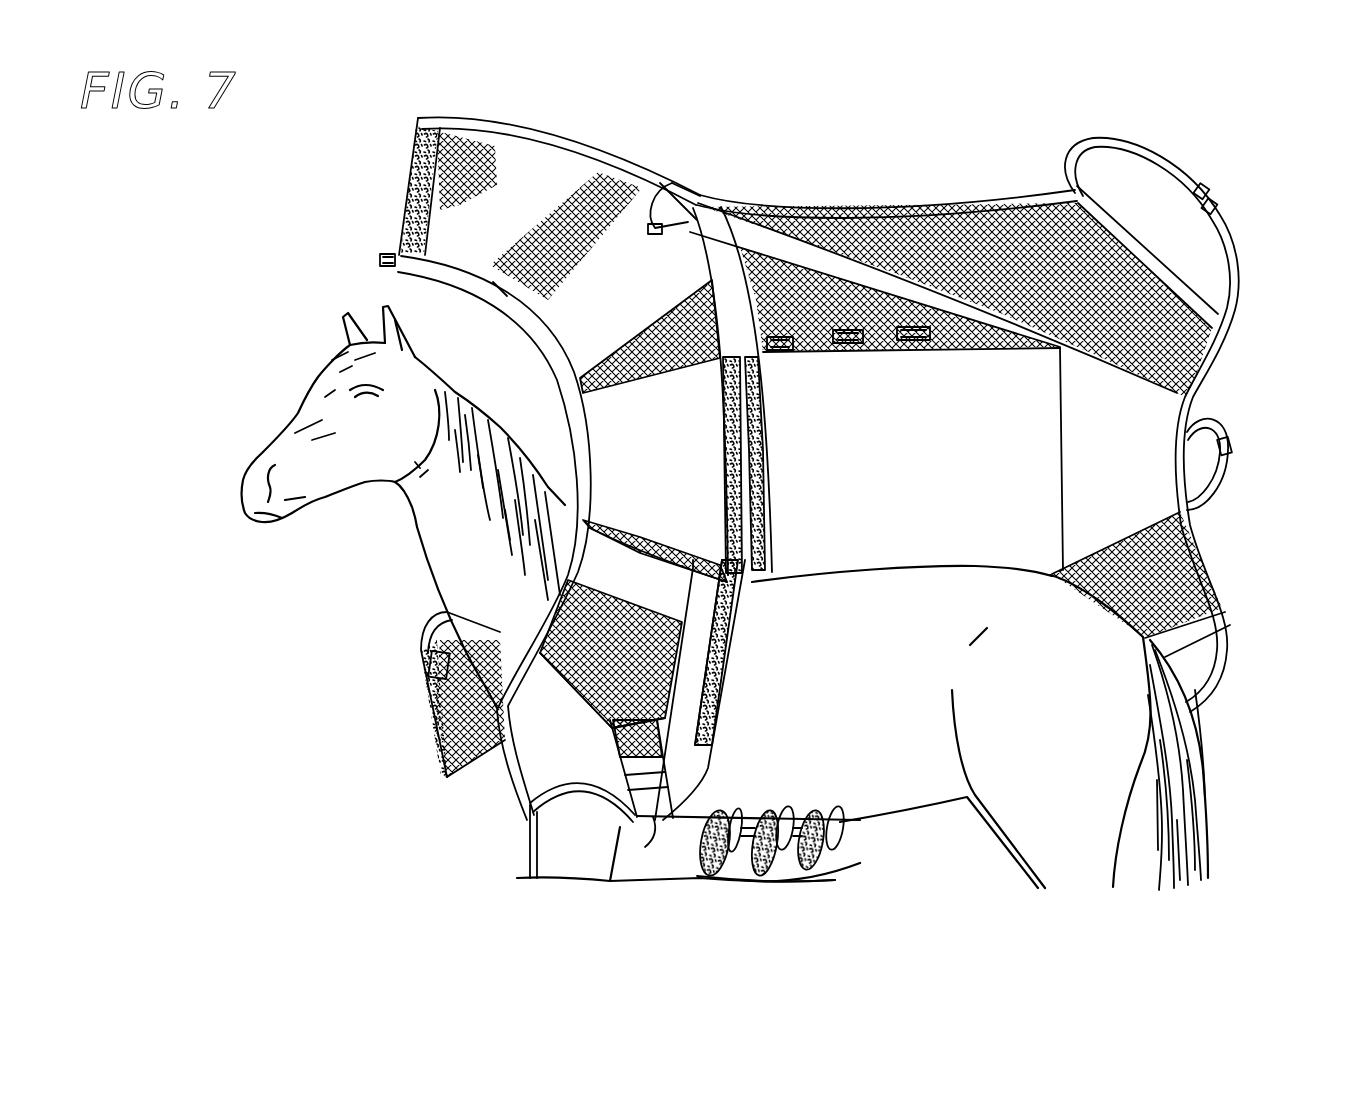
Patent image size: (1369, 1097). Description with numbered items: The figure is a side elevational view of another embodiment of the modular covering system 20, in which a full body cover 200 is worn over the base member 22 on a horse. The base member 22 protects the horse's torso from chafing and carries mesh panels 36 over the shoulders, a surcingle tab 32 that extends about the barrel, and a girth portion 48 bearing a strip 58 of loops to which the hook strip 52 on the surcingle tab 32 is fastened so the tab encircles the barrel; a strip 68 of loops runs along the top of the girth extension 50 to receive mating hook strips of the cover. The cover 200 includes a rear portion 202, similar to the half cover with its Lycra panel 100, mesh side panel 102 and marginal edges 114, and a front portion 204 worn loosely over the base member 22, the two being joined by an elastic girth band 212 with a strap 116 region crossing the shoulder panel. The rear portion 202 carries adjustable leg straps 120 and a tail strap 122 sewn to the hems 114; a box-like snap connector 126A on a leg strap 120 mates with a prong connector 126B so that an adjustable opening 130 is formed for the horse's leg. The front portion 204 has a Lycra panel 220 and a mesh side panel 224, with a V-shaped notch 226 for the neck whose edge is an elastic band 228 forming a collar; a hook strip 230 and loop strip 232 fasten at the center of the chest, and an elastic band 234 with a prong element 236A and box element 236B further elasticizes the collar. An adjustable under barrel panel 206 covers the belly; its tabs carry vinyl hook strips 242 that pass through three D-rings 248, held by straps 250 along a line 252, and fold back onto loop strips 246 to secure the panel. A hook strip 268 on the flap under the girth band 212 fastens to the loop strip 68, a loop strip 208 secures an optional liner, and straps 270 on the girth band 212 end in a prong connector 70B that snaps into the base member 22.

The covering system 20 is at (790, 196).
The base member 22 is at (610, 568).
The surcingle tab 32 is at (688, 870).
The mesh panels 36 is at (598, 715).
The girth portion 48 is at (703, 607).
The girth extension 50 is at (703, 782).
The strip of VELCRO hooks 52 is at (660, 760).
The strip of VELCRO loops 58 is at (665, 733).
The strip of VELCRO loops 68 is at (733, 641).
The prong snap connector 70B is at (662, 193).
The Lycra panel 100 is at (996, 514).
The mesh side panel 102 is at (968, 264).
The marginal edges 114 is at (1003, 206).
The diagonal strap 116 is at (956, 320).
The adjustable leg straps 120 is at (1238, 282).
The adjustable tail strap 122 is at (1223, 493).
The box-like snap connector 126A is at (1203, 192).
The prong snap connector 126B is at (1216, 216).
The adjustable size opening 130 is at (1187, 137).
The cover 200 is at (640, 306).
The rear portion 202 is at (947, 183).
The front portion 204 is at (622, 116).
The under barrel panel 206 is at (528, 880).
The releasable securable means 208 is at (763, 461).
The girth band 212 is at (703, 373).
The panel 220 is at (688, 482).
The mesh side panel 224 is at (437, 616).
The V-shaped notch 226 is at (543, 392).
The elastic band 228 is at (530, 350).
The strip of VELCRO hooks 230 is at (432, 725).
The strip of VELCRO loops 232 is at (410, 170).
The elastic band 234 is at (503, 288).
The prong element 236A is at (381, 262).
The box element 236B is at (425, 698).
The vinyl strip 242 is at (833, 805).
The strip having VELCRO loops 246 is at (820, 866).
The D-rings 248 is at (866, 346).
The straps 250 is at (903, 343).
The line 252 is at (973, 336).
The strip of VELCRO hook material 268 is at (725, 507).
The straps 270 is at (696, 210).